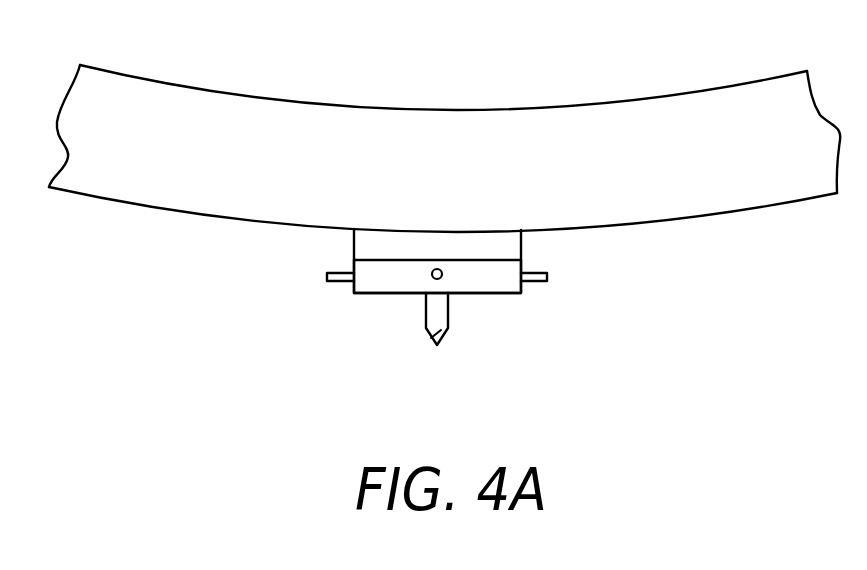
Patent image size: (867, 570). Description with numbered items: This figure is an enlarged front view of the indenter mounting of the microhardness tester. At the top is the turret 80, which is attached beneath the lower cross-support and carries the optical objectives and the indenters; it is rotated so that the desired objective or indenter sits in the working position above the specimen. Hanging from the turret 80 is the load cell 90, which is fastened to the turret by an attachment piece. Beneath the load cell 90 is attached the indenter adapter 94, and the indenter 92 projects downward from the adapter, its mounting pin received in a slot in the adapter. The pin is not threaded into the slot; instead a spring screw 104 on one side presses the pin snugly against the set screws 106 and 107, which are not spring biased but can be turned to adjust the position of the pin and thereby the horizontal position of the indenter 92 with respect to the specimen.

The turret 80 is at (212, 195).
The load cell 90 is at (363, 245).
The indenter 92 is at (435, 333).
The indenter adapter 94 is at (503, 282).
The spring screw 104 is at (342, 282).
The set screw 106 is at (540, 273).
The set screw 107 is at (443, 276).